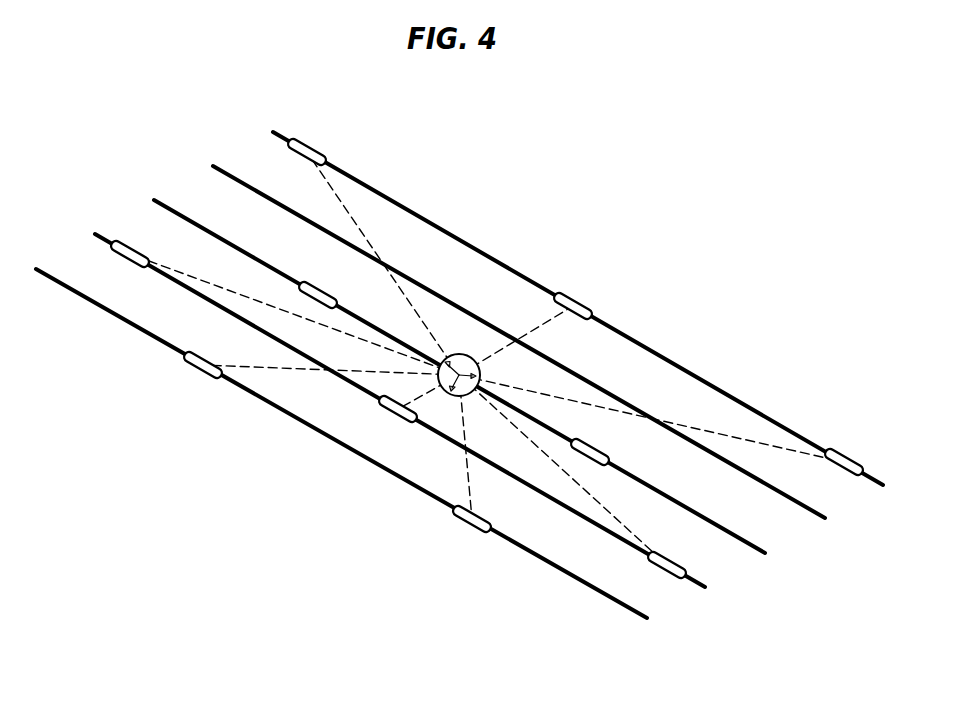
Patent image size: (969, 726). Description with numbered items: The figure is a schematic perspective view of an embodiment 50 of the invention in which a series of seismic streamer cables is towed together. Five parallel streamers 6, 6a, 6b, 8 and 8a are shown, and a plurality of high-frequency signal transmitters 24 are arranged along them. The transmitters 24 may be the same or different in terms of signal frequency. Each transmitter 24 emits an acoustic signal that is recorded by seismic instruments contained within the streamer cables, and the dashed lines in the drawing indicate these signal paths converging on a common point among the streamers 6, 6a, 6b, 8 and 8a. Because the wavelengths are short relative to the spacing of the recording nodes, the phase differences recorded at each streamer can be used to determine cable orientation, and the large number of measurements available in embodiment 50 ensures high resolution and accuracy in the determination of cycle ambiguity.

The transmitter 24 is at (309, 147).
The embodiment 50 is at (486, 205).
The seismic streamer cable 6 is at (637, 618).
The streamer 6a is at (698, 586).
The streamer 6b is at (752, 551).
The streamer 8 is at (872, 484).
The streamer 8a is at (815, 518).